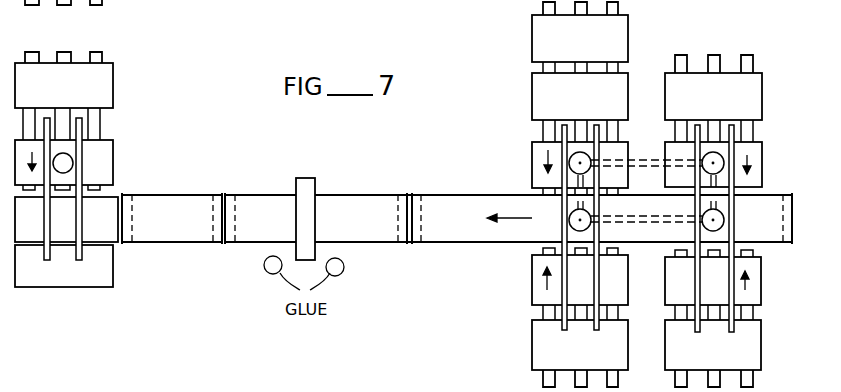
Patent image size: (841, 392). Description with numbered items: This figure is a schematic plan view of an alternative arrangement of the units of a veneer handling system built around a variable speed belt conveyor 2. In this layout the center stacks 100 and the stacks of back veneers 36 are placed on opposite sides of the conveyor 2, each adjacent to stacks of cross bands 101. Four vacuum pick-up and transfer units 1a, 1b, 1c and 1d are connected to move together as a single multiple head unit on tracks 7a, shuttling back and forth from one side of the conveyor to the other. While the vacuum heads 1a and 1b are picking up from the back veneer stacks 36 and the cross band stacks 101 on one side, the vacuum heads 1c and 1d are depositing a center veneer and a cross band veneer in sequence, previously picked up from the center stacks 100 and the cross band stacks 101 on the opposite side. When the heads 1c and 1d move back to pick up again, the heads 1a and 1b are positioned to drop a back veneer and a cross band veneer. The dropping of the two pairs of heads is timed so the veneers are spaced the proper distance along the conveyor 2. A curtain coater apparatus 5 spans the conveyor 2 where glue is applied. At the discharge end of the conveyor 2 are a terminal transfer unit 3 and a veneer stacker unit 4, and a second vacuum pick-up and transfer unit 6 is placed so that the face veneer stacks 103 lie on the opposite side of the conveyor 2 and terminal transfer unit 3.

The vacuum pick-up and transfer unit 1a is at (583, 162).
The vacuum pick-up and transfer unit 1b is at (718, 168).
The vacuum pick-up and transfer unit 1c is at (572, 218).
The vacuum pick-up and transfer unit 1d is at (720, 223).
The variable speed belt conveyor unit 2 is at (367, 196).
The terminal transfer unit 3 is at (107, 233).
The veneer stacker unit 4 is at (98, 278).
The curtain coater apparatus 5 is at (308, 178).
The vacuum pick-up and transfer unit 6 is at (73, 168).
The tracks 7a is at (567, 330).
The stacks of back veneers 36 is at (617, 147).
The center stacks 100 is at (618, 347).
The stacks of cross bands 101 is at (753, 113).
The face veneer stacks 103 is at (107, 96).